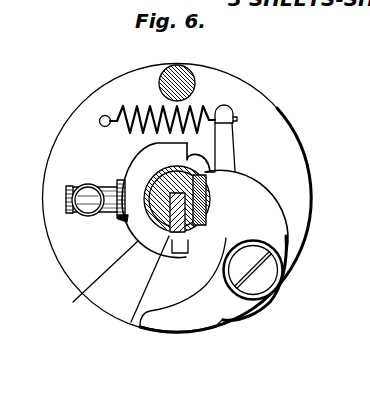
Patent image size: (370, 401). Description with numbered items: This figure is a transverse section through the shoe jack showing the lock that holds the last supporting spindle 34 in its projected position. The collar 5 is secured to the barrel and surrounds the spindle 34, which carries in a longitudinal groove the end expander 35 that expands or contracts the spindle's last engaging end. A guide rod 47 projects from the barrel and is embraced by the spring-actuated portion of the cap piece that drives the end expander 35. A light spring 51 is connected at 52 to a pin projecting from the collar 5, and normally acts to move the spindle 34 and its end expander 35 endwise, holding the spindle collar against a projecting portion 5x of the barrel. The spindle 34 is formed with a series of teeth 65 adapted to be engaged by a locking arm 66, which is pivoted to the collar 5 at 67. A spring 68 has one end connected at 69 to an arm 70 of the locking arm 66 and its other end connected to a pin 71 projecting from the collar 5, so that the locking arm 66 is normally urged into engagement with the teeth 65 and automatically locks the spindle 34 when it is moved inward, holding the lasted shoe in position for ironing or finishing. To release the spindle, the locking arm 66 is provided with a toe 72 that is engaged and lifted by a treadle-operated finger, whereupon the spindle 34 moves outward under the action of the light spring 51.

The collar 5 is at (273, 116).
The projecting portion of the barrel 5x is at (83, 296).
The last supporting spindle 34 is at (148, 214).
The end expander 35 is at (130, 321).
The guide rod 47 is at (181, 66).
The light spring 51 is at (114, 215).
The connection of light spring to collar pin 52 is at (68, 194).
The teeth 65 is at (212, 208).
The locking arm 66 is at (265, 196).
The pivot of locking arm 67 is at (259, 279).
The spring 68 is at (145, 106).
The connection of spring to arm 69 is at (231, 109).
The arm of locking arm 70 is at (236, 141).
The pin 71 is at (99, 119).
The toe 72 is at (178, 323).